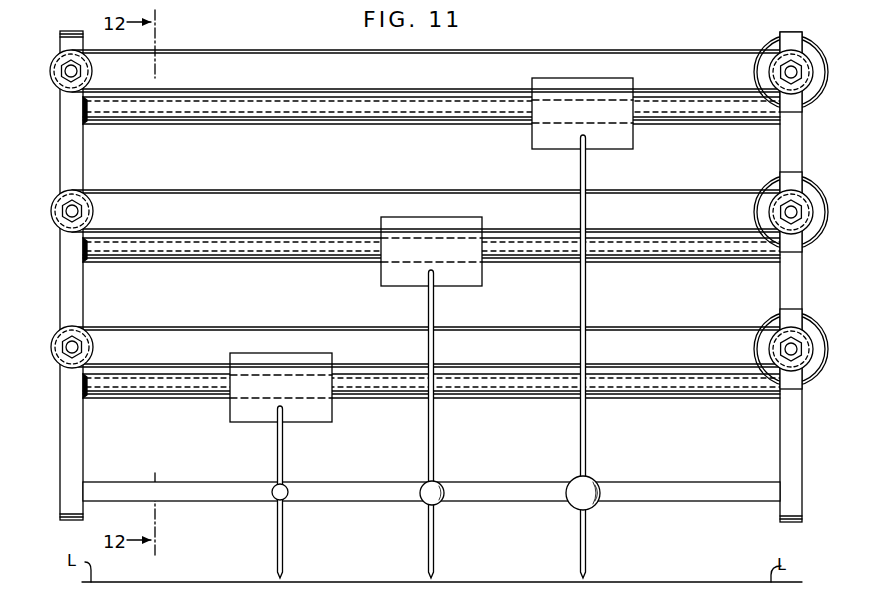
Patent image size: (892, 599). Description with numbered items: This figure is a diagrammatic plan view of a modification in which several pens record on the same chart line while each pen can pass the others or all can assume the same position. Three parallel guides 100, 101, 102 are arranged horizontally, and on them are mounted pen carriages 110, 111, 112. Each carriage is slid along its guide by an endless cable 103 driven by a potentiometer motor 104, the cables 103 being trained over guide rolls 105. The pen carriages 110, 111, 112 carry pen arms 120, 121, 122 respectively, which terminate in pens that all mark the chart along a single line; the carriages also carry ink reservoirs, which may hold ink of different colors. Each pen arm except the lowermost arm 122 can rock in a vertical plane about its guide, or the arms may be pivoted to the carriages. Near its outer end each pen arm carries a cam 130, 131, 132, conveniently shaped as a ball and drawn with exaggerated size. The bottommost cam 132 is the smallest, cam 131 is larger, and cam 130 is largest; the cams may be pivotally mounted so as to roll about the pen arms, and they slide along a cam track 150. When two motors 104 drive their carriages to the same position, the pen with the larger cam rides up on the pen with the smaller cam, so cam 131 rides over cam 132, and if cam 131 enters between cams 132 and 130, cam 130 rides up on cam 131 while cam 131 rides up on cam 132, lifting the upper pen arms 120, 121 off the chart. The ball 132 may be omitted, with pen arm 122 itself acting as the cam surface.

The guide 100 is at (228, 118).
The guide 101 is at (225, 254).
The guide 102 is at (160, 390).
The endless cable 103 is at (282, 50).
The potentiometer motor 104 is at (776, 48).
The guide roll 105 is at (87, 72).
The pen carriage 110 is at (540, 132).
The pen carriage 111 is at (390, 270).
The pen carriage 112 is at (238, 408).
The pen arm 120 is at (579, 456).
The pen arm 121 is at (427, 456).
The pen arm 122 is at (276, 456).
The cam 130 is at (580, 500).
The cam 131 is at (428, 500).
The cam 132 is at (275, 500).
The cam track 150 is at (360, 502).